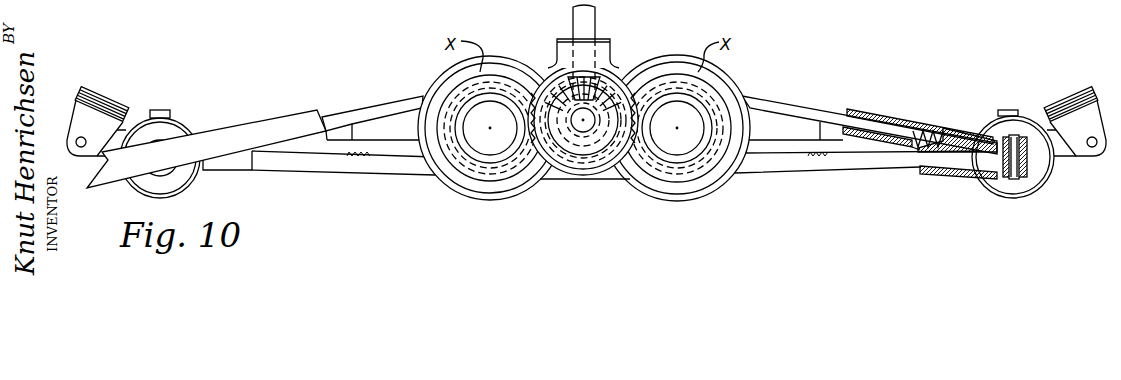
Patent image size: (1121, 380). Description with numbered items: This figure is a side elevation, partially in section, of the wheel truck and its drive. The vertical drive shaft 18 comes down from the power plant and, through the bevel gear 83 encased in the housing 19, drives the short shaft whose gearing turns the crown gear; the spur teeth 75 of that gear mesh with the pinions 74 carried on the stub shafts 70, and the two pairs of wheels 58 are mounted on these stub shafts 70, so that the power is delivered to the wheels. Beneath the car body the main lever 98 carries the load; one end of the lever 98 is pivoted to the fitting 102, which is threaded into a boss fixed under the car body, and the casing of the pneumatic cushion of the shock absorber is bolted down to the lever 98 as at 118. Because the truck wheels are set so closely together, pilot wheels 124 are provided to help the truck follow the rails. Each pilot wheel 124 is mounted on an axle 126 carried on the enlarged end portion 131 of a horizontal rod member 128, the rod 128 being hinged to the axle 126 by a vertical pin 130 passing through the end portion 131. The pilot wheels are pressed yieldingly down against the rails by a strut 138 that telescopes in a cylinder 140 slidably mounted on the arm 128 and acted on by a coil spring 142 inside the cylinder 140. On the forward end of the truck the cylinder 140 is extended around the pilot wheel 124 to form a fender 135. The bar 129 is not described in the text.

The drive shaft 18 is at (594, 27).
The housing 19 is at (548, 67).
The wheels 58 is at (475, 200).
The stub shafts 70 is at (697, 117).
The pinion 74 is at (468, 158).
The spur teeth 75 is at (625, 87).
The bevel gear 83 is at (556, 84).
The main lever 98 is at (335, 153).
The fitting 102 is at (1092, 84).
The bolts 118 is at (365, 153).
The pilot wheels 124 is at (992, 197).
The axles 126 is at (1018, 136).
The horizontal rod members 128 is at (813, 163).
The clamp bar 129 is at (950, 166).
The vertical pins 130 is at (1015, 175).
The enlarged end portions 131 is at (1045, 168).
The fenders 135 is at (105, 177).
The struts 138 is at (783, 107).
The cylinders 140 is at (865, 110).
The coil springs 142 is at (943, 128).